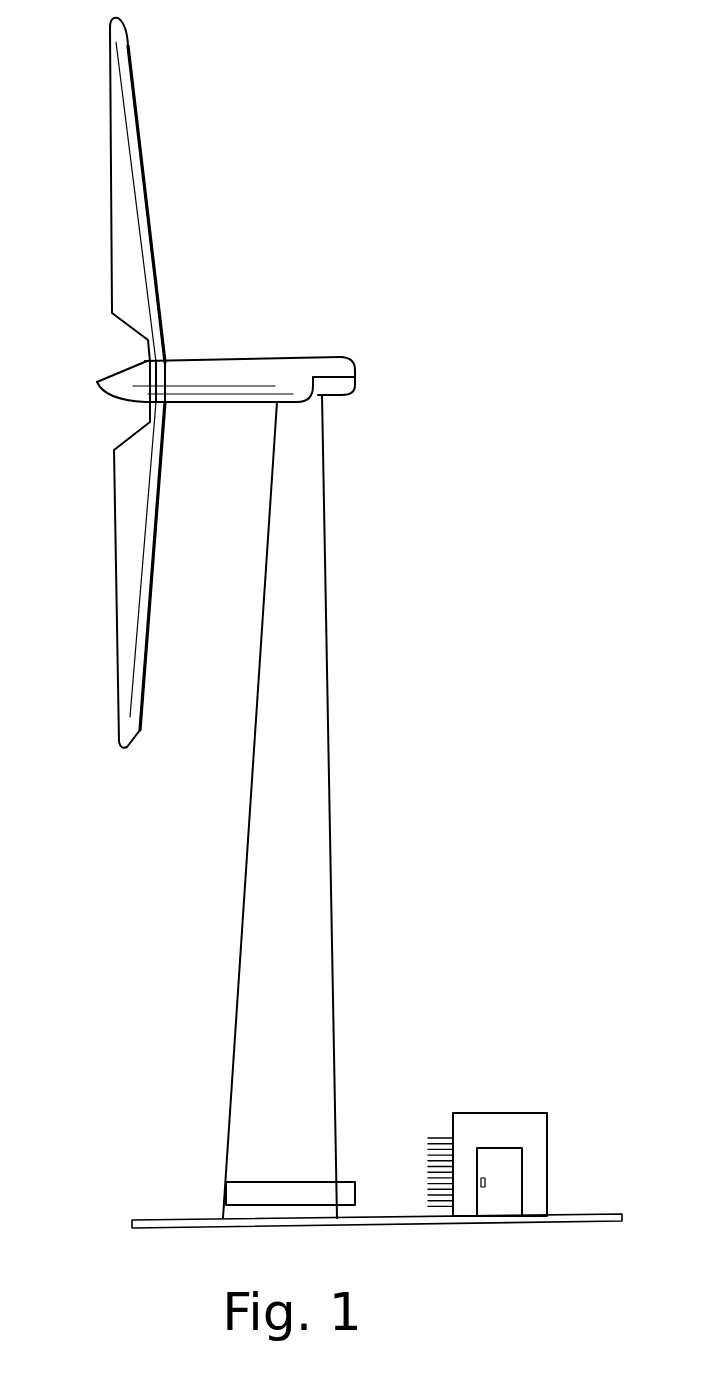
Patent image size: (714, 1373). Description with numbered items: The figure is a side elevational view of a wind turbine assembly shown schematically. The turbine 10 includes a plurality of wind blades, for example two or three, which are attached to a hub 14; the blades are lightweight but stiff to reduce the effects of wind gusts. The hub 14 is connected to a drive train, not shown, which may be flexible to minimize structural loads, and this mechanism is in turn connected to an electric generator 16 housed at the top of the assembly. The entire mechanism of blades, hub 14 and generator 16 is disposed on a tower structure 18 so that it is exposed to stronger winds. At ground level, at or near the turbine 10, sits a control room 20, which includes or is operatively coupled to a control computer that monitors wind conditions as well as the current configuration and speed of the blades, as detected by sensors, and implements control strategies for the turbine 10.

The turbine 10 is at (446, 205).
The hub 14 is at (158, 378).
The electric generator 16 is at (265, 338).
The tower structure 18 is at (323, 812).
The control room 20 is at (538, 1147).